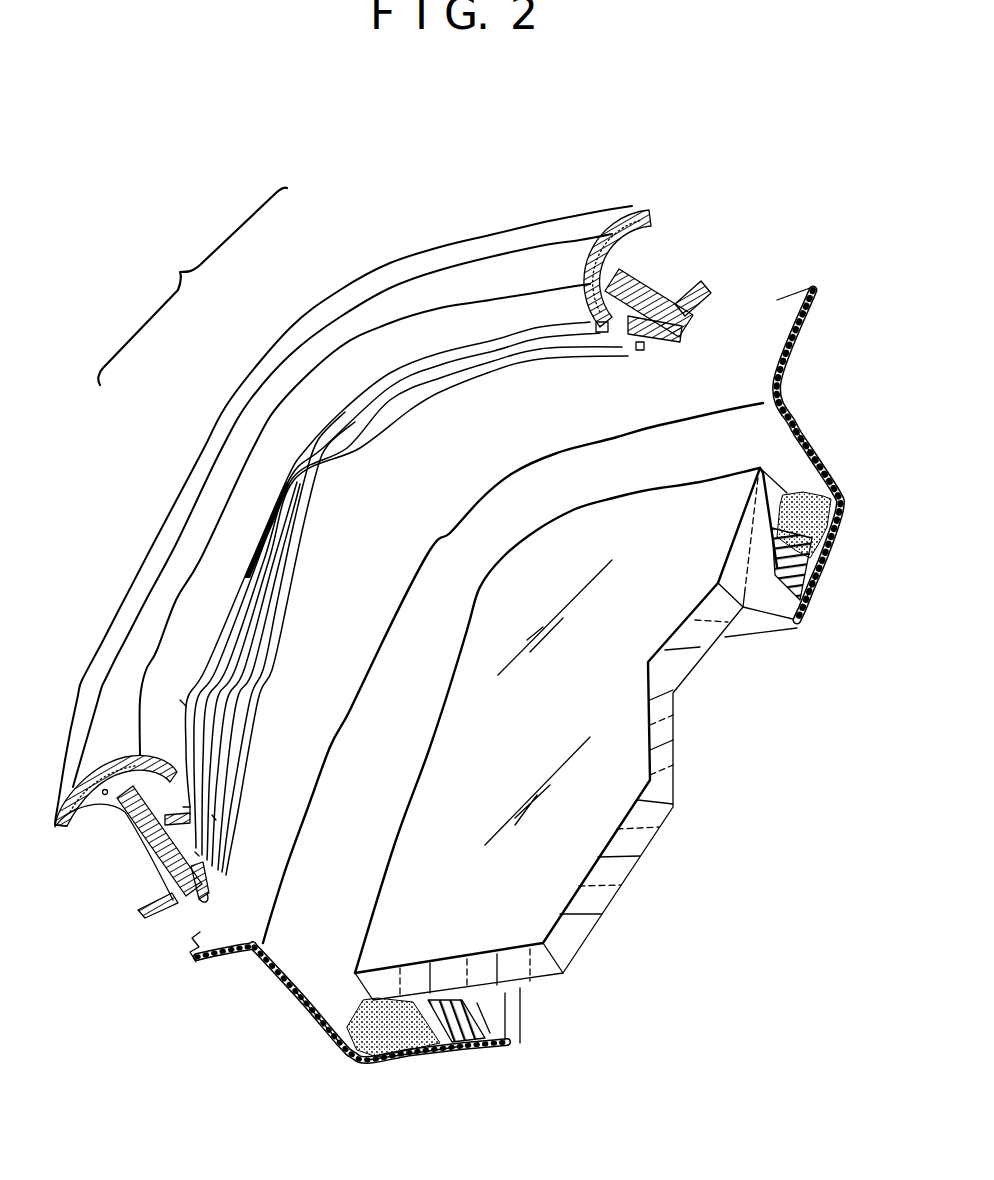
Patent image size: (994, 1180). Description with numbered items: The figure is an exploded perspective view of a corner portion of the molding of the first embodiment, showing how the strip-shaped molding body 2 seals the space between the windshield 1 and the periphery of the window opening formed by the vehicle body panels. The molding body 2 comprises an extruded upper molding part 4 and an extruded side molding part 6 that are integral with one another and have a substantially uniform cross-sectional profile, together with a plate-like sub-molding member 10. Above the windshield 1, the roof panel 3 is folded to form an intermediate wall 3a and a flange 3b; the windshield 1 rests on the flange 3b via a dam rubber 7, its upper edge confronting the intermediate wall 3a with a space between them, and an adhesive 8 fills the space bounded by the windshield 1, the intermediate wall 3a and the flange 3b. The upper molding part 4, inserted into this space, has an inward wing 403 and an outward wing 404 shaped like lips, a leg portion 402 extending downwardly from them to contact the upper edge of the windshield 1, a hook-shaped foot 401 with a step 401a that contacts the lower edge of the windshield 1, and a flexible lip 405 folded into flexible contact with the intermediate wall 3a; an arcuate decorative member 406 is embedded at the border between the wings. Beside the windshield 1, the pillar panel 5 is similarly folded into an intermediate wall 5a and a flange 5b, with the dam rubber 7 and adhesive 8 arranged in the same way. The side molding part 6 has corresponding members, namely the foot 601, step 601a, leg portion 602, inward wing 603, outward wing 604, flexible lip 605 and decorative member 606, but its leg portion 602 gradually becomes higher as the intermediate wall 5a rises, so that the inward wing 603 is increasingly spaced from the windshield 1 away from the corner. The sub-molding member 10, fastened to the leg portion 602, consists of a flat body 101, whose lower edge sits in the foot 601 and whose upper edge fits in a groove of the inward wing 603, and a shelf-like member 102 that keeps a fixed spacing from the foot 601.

The windshield 1 is at (623, 767).
The molding body 2 is at (179, 266).
The roof panel 3 is at (760, 372).
The intermediate wall 3a is at (800, 417).
The flange 3b is at (815, 587).
The upper molding part 4 is at (520, 281).
The pillar panel 5 is at (258, 915).
The intermediate wall 5a is at (310, 1003).
The flange 5b is at (430, 1052).
The side molding part 6 is at (100, 585).
The dam rubber 7 is at (787, 567).
The adhesive 8 is at (387, 1033).
The sub-molding member 10 is at (212, 680).
The flat body 101 is at (212, 815).
The shelf-like member 102 is at (183, 785).
The foot 401 is at (650, 340).
The step 401a is at (633, 345).
The leg portion 402 is at (647, 280).
The inward wing 403 is at (597, 333).
The outward wing 404 is at (643, 205).
The flexible lip 405 is at (707, 290).
The arcuate decorative member 406 is at (592, 262).
The foot 601 is at (208, 866).
The step 601a is at (195, 852).
The leg portion 602 is at (135, 832).
The inward wing 603 is at (180, 700).
The outward wing 604 is at (55, 828).
The flexible lip 605 is at (140, 910).
The arcuate decorative member 606 is at (110, 755).